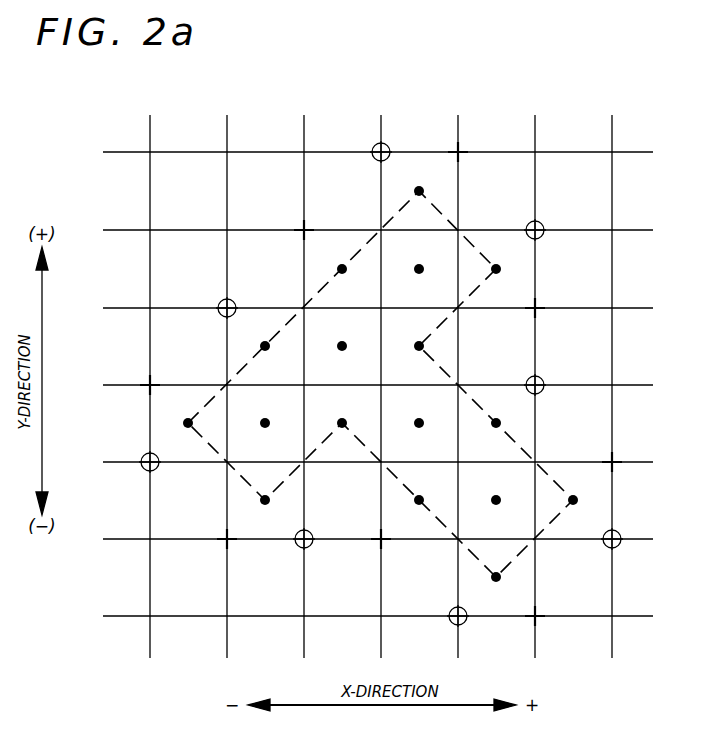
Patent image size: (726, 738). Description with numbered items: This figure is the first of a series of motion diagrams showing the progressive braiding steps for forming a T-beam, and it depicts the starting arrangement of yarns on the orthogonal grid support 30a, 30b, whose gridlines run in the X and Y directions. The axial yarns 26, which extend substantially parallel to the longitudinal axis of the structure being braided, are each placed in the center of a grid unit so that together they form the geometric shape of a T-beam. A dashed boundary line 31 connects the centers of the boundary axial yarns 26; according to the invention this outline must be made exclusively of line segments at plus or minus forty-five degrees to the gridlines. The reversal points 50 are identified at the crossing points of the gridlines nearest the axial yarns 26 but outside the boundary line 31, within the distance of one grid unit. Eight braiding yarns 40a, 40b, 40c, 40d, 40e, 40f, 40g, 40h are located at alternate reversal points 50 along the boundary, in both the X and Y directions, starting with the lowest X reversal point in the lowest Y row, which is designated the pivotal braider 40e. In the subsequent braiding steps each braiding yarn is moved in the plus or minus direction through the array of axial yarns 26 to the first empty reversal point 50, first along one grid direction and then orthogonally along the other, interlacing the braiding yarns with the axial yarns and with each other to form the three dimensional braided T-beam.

The axial yarns 26 is at (421, 189).
The grid support 30a is at (613, 208).
The grid support 30b is at (588, 309).
The boundary line 31 is at (210, 398).
The braiding yarn 40a is at (387, 146).
The braiding yarn 40b is at (540, 225).
The braiding yarn 40c is at (541, 380).
The braiding yarn 40d is at (618, 534).
The braiding yarn 40e is at (463, 621).
The braiding yarn 40f is at (299, 545).
The braiding yarn 40g is at (145, 457).
The braiding yarn 40h is at (233, 302).
The reversal points 50 is at (377, 148).